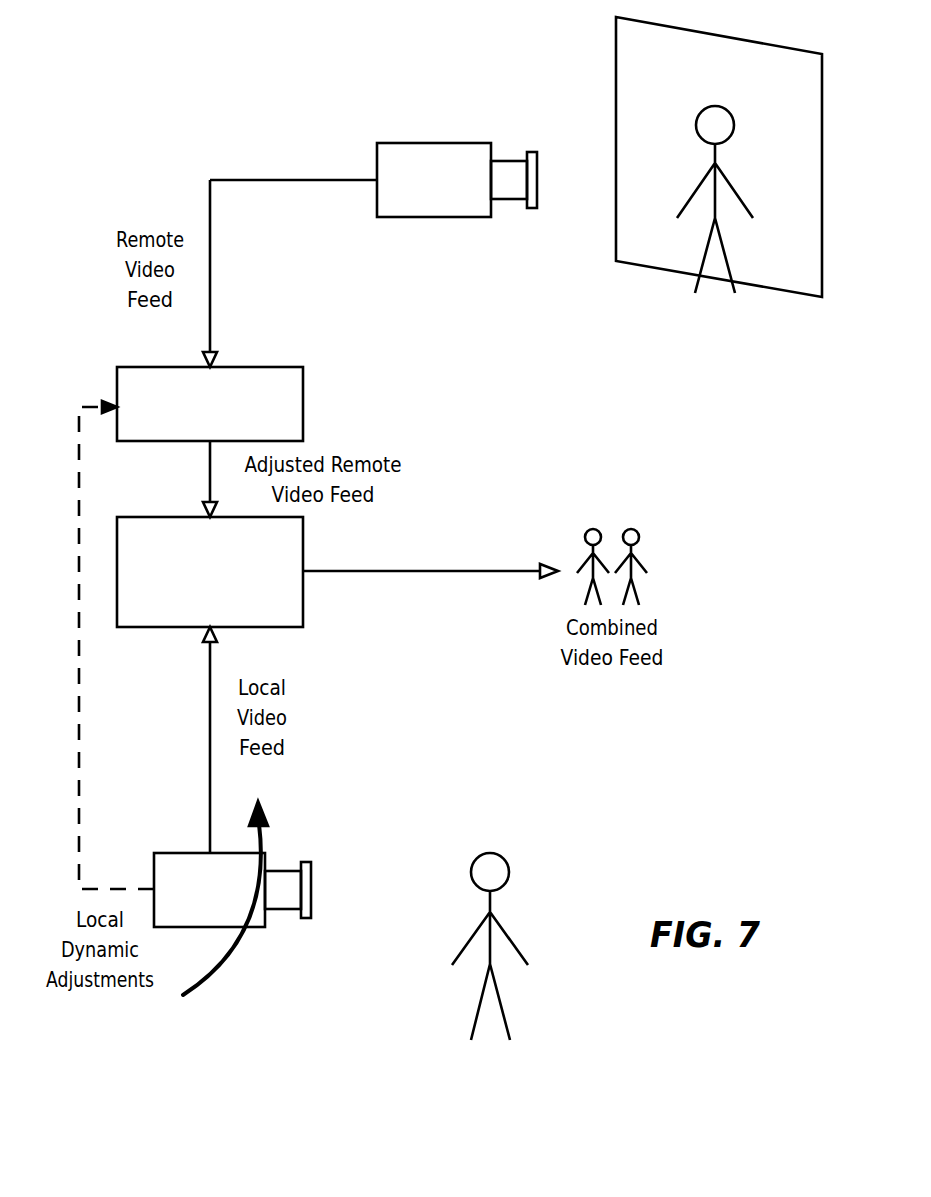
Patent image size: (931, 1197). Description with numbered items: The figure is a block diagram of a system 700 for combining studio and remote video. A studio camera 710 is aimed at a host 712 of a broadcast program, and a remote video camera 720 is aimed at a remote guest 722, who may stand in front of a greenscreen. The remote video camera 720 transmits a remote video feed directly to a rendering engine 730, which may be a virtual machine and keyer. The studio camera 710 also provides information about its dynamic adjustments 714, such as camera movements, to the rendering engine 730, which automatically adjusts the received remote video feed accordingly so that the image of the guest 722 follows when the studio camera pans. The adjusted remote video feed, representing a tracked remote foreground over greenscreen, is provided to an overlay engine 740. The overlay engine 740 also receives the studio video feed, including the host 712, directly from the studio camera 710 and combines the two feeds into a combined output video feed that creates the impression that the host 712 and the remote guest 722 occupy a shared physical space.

The system 700 is at (278, 141).
The studio camera 710 is at (193, 903).
The host 712 is at (500, 855).
The local dynamic adjustments arrow 714 is at (222, 975).
The remote video camera 720 is at (416, 193).
The remote guest 722 is at (730, 110).
The rendering engine 730 is at (193, 417).
The overlay engine 740 is at (193, 585).